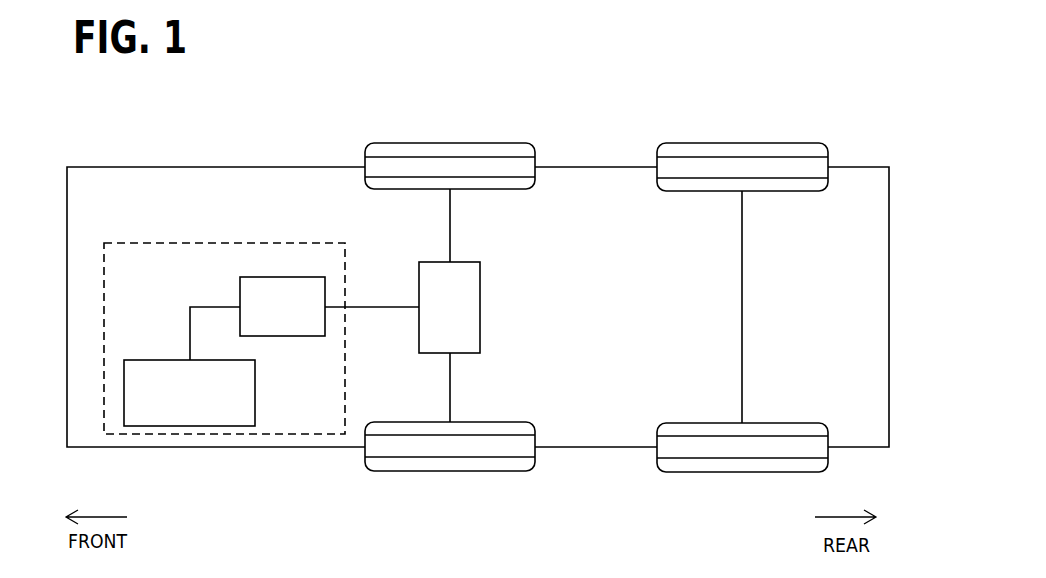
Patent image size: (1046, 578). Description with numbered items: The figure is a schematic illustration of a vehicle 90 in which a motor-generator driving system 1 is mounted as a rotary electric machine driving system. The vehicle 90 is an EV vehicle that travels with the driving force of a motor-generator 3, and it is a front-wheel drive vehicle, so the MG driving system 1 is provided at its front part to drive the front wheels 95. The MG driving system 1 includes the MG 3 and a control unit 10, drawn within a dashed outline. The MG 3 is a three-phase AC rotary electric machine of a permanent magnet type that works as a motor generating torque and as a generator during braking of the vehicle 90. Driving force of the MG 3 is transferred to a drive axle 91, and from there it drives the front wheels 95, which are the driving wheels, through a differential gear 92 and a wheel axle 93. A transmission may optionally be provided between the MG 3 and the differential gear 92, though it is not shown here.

The motor-generator driving system 1 is at (187, 243).
The motor-generator 3 is at (288, 337).
The control unit 10 is at (148, 360).
The vehicle 90 is at (187, 166).
The drive axle 91 is at (378, 306).
The differential gear 92 is at (481, 305).
The wheel axle 93 is at (452, 224).
The front wheels 95 is at (383, 143).